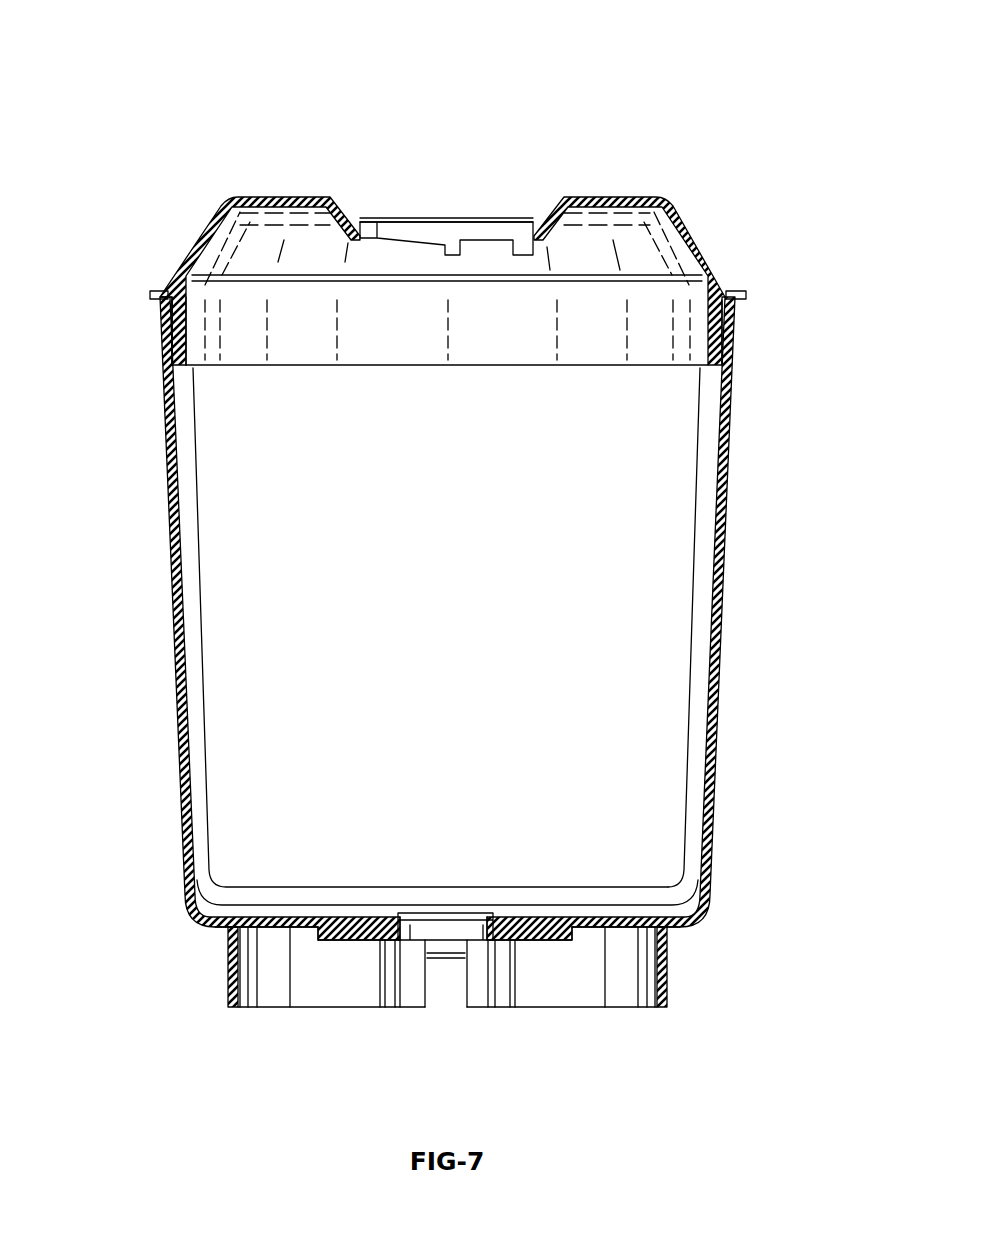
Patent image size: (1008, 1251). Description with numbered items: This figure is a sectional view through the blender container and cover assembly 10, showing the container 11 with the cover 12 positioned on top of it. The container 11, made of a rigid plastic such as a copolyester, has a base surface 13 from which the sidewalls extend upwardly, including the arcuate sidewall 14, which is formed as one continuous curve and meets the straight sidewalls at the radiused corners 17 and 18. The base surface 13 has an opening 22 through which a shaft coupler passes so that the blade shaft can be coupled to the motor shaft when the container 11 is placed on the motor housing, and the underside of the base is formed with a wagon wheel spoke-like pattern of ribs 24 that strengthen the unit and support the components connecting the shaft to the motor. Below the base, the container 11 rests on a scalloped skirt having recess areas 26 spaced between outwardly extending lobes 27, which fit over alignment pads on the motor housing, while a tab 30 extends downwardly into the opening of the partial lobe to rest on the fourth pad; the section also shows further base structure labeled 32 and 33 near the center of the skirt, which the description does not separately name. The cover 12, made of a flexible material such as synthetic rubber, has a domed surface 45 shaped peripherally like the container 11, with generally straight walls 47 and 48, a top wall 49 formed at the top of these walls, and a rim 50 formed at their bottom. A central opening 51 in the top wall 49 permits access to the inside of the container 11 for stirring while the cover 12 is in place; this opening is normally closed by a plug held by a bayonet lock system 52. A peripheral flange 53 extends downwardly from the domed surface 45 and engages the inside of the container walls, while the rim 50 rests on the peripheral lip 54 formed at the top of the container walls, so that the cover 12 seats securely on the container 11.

The blender container and cover assembly 10 is at (163, 106).
The container 11 is at (287, 192).
The cover 12 is at (736, 461).
The base surface 13 is at (620, 914).
The sidewall 14 is at (614, 605).
The radiused corner 17 is at (722, 716).
The radiused corner 18 is at (178, 656).
The opening 22 is at (446, 940).
The ribs 24 is at (352, 943).
The recess areas 26 is at (307, 988).
The lobes 27 is at (228, 976).
The tab 30 is at (443, 948).
The inner wall 32 is at (413, 985).
The opening 33 is at (447, 995).
The domed surface 45 is at (672, 204).
The straight wall 47 is at (703, 255).
The straight wall 48 is at (206, 268).
The top wall 49 is at (563, 196).
The rim 50 is at (165, 296).
The central opening 51 is at (387, 214).
The bayonet lock system 52 is at (481, 237).
The peripheral flange 53 is at (172, 345).
The peripheral lip 54 is at (157, 297).